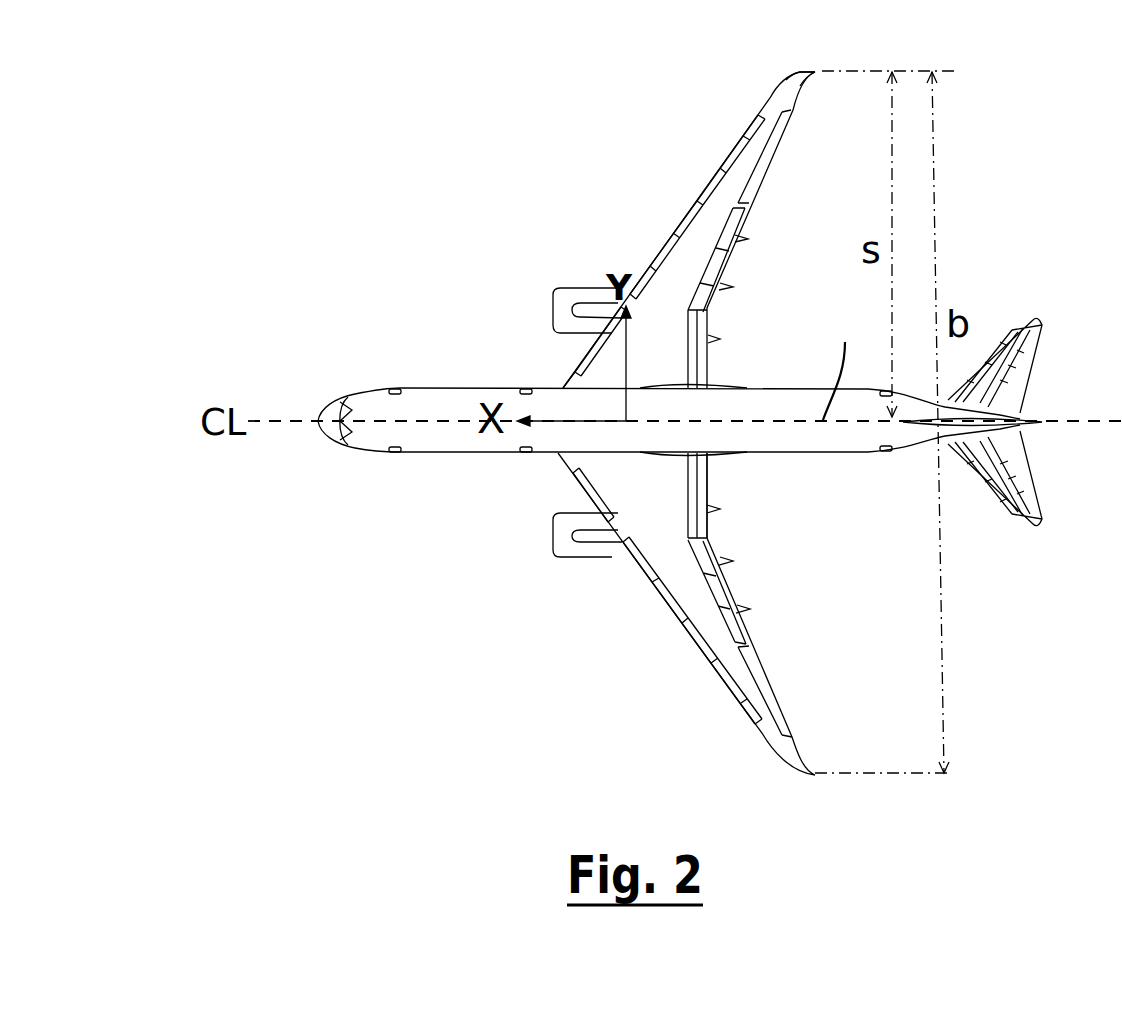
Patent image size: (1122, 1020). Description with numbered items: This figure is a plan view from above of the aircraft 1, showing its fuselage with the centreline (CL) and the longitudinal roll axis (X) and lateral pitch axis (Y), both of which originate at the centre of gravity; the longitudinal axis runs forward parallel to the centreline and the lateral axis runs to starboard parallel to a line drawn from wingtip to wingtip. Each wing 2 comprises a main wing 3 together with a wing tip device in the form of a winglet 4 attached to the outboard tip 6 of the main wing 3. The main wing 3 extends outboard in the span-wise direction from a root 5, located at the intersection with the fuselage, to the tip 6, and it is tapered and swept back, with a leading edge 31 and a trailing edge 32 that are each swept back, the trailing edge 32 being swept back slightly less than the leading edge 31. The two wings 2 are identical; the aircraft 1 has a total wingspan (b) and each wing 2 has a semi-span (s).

The aircraft 1 is at (510, 268).
The wing 2 is at (648, 225).
The main wing 3 is at (657, 288).
The winglet 4 is at (792, 80).
The root 5 is at (573, 390).
The tip 6 is at (767, 113).
The leading edge 31 is at (680, 625).
The trailing edge 32 is at (727, 582).